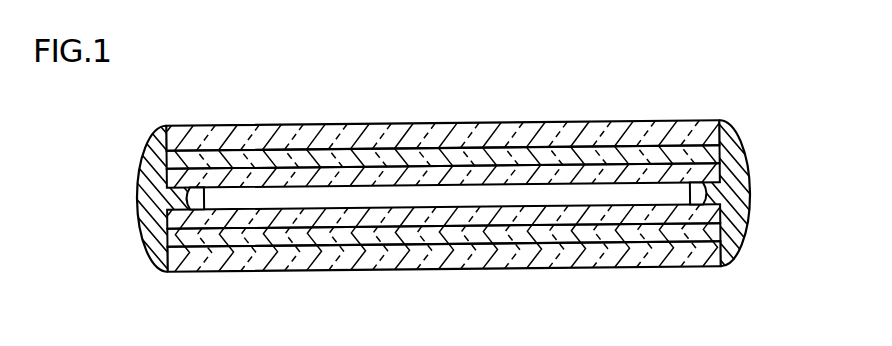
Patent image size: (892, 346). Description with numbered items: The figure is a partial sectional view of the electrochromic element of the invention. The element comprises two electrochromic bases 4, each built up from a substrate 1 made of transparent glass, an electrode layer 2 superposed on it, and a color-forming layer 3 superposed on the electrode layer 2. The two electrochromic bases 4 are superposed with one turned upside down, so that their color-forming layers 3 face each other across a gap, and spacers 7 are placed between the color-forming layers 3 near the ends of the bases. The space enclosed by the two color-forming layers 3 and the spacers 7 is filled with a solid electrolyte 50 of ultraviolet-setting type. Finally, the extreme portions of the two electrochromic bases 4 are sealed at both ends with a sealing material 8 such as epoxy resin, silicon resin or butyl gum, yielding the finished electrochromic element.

The substrate 1 is at (721, 127).
The electrode layer 2 is at (721, 156).
The color-forming layer 3 is at (721, 174).
The electrochromic base 4 is at (780, 100).
The spacer 7 is at (190, 202).
The sealing material 8 is at (149, 169).
The solid electrolyte 50 is at (377, 192).